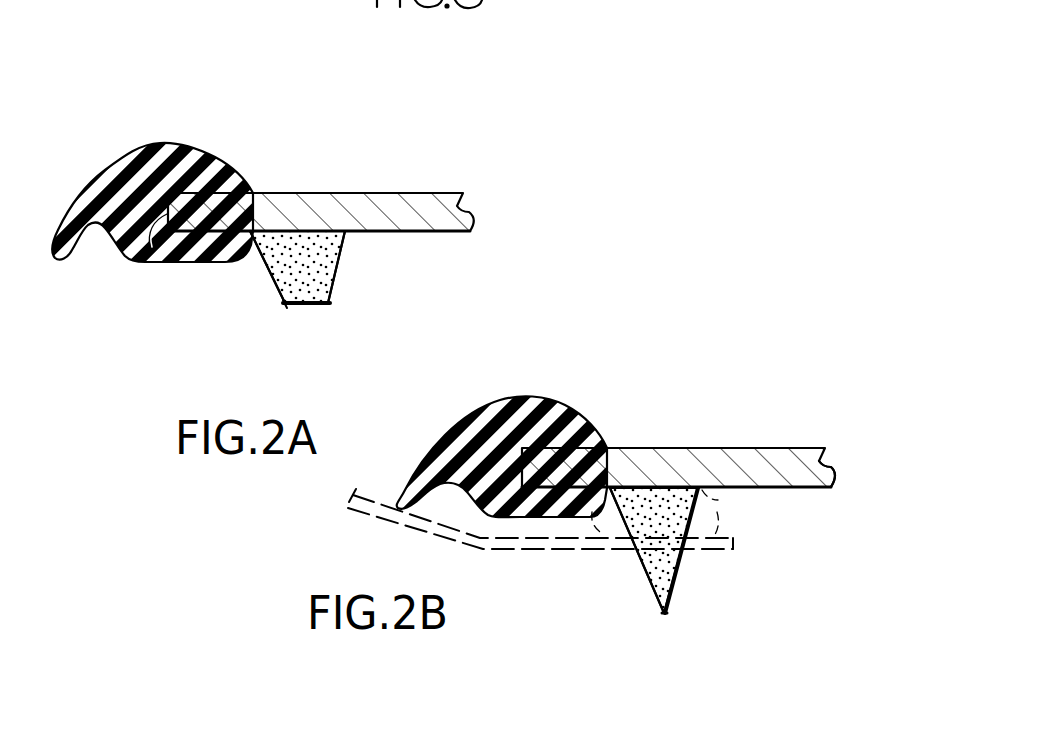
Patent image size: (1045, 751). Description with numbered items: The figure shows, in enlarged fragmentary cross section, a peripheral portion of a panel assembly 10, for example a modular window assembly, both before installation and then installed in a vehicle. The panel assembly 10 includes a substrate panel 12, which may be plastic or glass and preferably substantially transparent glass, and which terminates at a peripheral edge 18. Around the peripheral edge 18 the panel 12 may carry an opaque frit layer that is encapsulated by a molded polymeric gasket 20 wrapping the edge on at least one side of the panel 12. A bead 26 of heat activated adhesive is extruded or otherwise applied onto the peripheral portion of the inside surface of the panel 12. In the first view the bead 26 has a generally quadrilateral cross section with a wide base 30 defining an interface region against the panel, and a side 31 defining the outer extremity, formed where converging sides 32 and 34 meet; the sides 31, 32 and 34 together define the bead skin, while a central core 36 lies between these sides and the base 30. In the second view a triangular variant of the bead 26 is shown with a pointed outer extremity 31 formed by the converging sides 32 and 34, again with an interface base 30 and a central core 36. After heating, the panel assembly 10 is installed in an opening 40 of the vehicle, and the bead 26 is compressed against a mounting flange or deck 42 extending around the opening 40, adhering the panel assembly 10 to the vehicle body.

In FIG. 2A, the panel assembly 10 is at (380, 172).
In FIG. 2B, the panel assembly 10 is at (695, 392).
In FIG. 2A, the substrate panel 12 is at (298, 192).
In FIG. 2B, the substrate panel 12 is at (797, 448).
In FIG. 2A, the peripheral edge 18 is at (135, 263).
In FIG. 2A, the polymeric gasket 20 is at (188, 145).
In FIG. 2B, the polymeric gasket 20 is at (557, 407).
In FIG. 2A, the bead of heat activated adhesive 26 is at (279, 314).
In FIG. 2B, the bead of heat activated adhesive 26 is at (727, 497).
In FIG. 2A, the wide base 30 is at (300, 220).
In FIG. 2B, the wide base 30 is at (659, 487).
In FIG. 2A, the outer extremity side 31 is at (305, 307).
In FIG. 2B, the outer extremity side 31 is at (680, 622).
In FIG. 2A, the converging side 32 is at (263, 272).
In FIG. 2B, the converging side 32 is at (640, 562).
In FIG. 2A, the converging side 34 is at (335, 288).
In FIG. 2B, the converging side 34 is at (680, 567).
In FIG. 2A, the central core 36 is at (315, 275).
In FIG. 2B, the central core 36 is at (677, 522).
In FIG. 2B, the opening 40 is at (803, 514).
In FIG. 2B, the mounting flange 42 is at (540, 545).